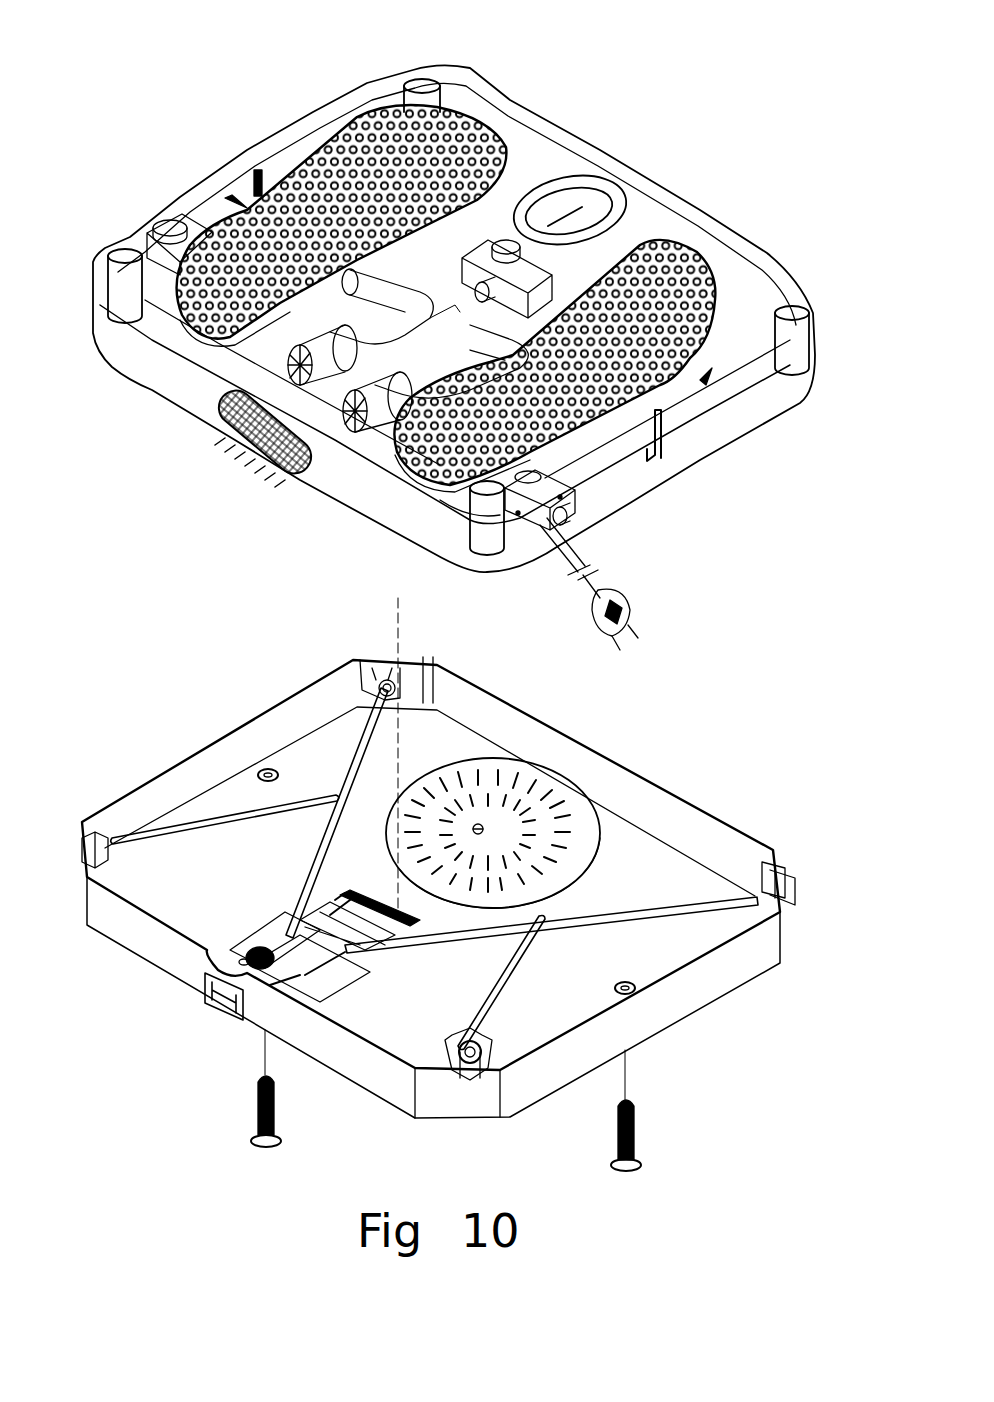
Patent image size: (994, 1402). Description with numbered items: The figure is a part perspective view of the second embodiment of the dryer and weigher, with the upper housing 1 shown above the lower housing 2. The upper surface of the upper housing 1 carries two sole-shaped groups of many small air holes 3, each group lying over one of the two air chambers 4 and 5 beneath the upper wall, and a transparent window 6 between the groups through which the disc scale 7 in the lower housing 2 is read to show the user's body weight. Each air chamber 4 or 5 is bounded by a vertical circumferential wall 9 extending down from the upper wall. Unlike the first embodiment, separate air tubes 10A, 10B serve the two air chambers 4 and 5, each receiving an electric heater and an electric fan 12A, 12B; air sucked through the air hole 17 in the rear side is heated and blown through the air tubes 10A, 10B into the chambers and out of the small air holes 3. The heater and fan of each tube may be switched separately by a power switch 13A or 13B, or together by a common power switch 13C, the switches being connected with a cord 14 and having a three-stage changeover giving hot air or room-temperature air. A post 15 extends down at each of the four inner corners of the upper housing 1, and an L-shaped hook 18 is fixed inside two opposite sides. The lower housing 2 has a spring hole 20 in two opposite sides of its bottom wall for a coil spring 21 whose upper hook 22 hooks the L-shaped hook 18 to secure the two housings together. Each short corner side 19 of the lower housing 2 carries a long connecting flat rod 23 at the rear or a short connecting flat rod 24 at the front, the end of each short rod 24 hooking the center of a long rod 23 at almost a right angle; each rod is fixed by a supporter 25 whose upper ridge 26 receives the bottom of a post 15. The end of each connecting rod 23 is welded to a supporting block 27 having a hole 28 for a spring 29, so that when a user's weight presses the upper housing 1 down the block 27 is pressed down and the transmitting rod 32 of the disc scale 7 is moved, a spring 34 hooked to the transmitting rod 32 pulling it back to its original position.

The upper housing 1 is at (795, 243).
The lower housing 2 is at (658, 752).
The small air holes 3 is at (480, 118).
The air chamber 4 is at (245, 207).
The air chamber 5 is at (706, 382).
The transparent window 6 is at (565, 200).
The disc scale 7 is at (565, 778).
The vertical circumferential wall 9 is at (440, 502).
The air tube 10A is at (392, 300).
The air tube 10B is at (495, 360).
The fan 12A is at (355, 420).
The fan 12B is at (300, 365).
The power switch 13A is at (522, 520).
The power switch 13B is at (162, 225).
The common power switch 13C is at (520, 262).
The cord 14 is at (600, 580).
The post 15 is at (424, 84).
The air hole 17 is at (220, 447).
The L-shaped hook 18 is at (255, 175).
The short corner side 19 is at (385, 655).
The spring hole 20 is at (262, 770).
The coil spring 21 is at (278, 1130).
The upper hook 22 is at (258, 1086).
The long connecting flat rod 23 is at (365, 722).
The short connecting flat rod 24 is at (205, 835).
The supporter 25 is at (368, 665).
The upper ridge 26 is at (472, 1040).
The supporting block 27 is at (272, 918).
The hole 28 is at (292, 982).
The spring 29 is at (252, 948).
The transmitting rod 32 is at (385, 910).
The spring 34 is at (365, 897).